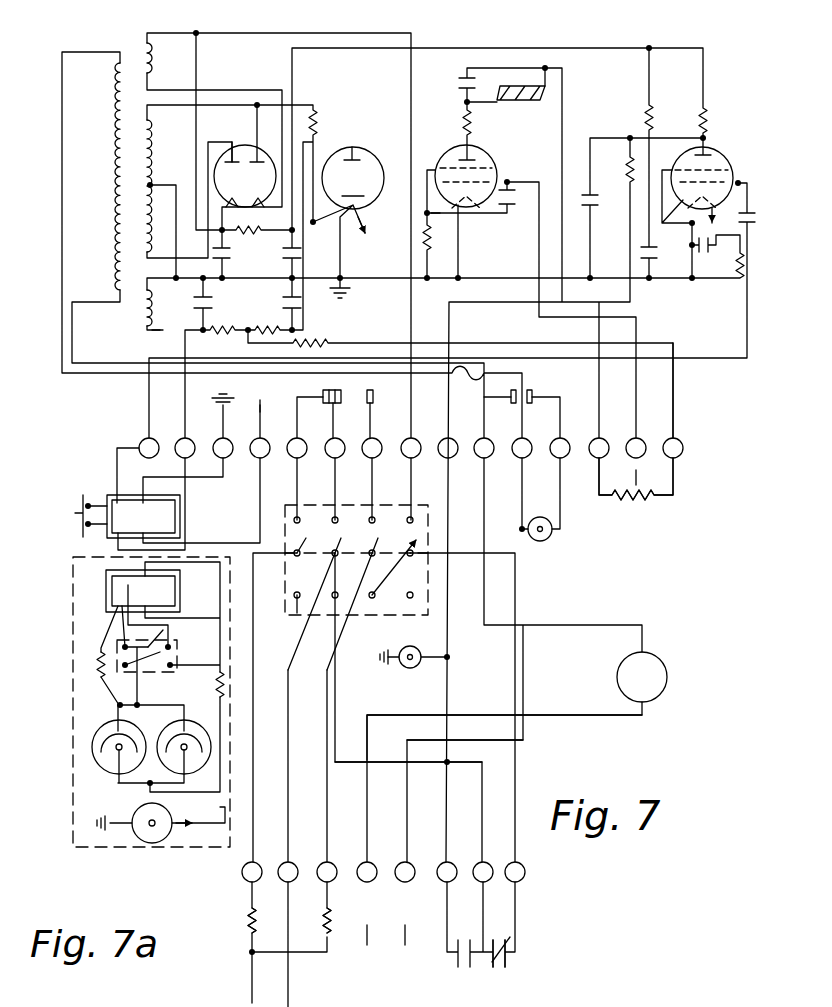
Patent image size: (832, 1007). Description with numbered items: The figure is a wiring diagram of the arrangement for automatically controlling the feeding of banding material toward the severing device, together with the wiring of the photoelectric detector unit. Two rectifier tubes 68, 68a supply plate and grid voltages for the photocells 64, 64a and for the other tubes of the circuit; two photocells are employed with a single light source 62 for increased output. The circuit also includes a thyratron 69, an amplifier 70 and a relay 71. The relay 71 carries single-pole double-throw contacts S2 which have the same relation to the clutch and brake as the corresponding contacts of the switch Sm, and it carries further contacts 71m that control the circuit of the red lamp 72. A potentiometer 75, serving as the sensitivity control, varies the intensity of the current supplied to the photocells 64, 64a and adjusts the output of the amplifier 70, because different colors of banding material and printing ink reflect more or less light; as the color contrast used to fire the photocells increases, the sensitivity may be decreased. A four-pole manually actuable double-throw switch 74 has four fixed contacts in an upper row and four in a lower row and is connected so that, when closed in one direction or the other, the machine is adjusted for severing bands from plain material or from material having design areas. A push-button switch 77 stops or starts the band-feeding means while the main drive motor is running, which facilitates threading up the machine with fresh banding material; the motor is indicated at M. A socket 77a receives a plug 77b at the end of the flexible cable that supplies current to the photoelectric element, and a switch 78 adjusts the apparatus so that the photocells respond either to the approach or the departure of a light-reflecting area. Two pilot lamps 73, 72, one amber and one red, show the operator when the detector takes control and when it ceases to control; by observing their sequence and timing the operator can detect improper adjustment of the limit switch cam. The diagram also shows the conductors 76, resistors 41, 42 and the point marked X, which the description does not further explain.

In FIG. 7, the rectifier tube 68 is at (243, 146).
In FIG. 7, the rectifier tube 68a is at (388, 130).
In FIG. 7, the thyratron 69 is at (449, 147).
In FIG. 7, the amplifier 70 is at (727, 157).
In FIG. 7, the relay 71 is at (518, 80).
In FIG. 7, the relay contacts 71m is at (533, 393).
In FIG. 7, the lamp 72 is at (561, 534).
In FIG. 7, the lamp 73 is at (424, 648).
In FIG. 7, the four-pole manually actuable double-throw switch 74 is at (426, 526).
In FIG. 7, the potentiometer 75 is at (694, 488).
In FIG. 7, the conductors 76 is at (397, 708).
In FIG. 7, the push-button switch 77 is at (78, 502).
In FIG. 7, the socket 77a is at (111, 492).
In FIG. 7a, the plug 77b is at (102, 590).
In FIG. 7a, the switch 78 is at (63, 657).
In FIG. 7a, the photocell 64 is at (90, 747).
In FIG. 7a, the photocell 64a is at (205, 690).
In FIG. 7a, the light source 62 is at (137, 842).
In FIG. 7, the resistor 41 is at (242, 948).
In FIG. 7, the resistor 42 is at (337, 932).
In FIG. 7, the motor M is at (651, 671).
In FIG. 7a, the connection point X is at (165, 857).
In FIG. 7, the single-pole double-throw contacts S2 is at (321, 394).
In FIG. 7, the switch Sm is at (533, 938).